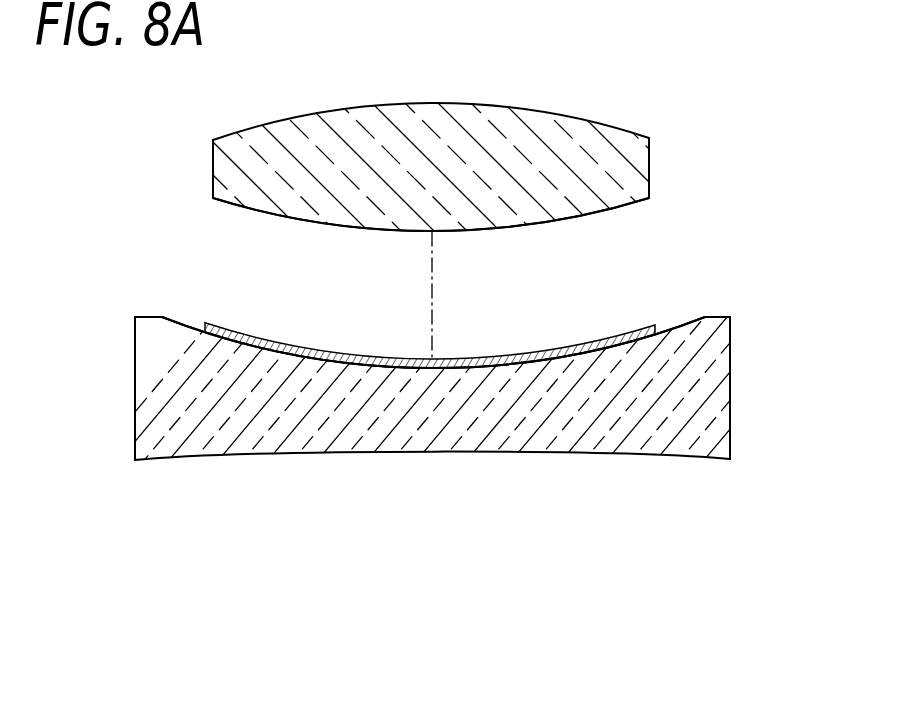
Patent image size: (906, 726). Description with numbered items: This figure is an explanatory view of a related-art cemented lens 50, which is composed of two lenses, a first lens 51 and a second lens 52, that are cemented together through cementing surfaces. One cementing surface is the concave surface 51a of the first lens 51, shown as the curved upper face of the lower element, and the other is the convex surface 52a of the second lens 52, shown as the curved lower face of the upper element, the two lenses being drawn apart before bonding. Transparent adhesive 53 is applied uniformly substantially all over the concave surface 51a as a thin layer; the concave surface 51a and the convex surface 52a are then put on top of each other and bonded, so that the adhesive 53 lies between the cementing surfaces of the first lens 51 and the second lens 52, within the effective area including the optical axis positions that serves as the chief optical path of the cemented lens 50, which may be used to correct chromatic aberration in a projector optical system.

The cemented lens 50 is at (461, 280).
The first lens 51 is at (722, 305).
The concave surface 51a is at (200, 325).
The second lens 52 is at (665, 163).
The convex surface 52a is at (250, 213).
The transparent adhesive 53 is at (268, 328).